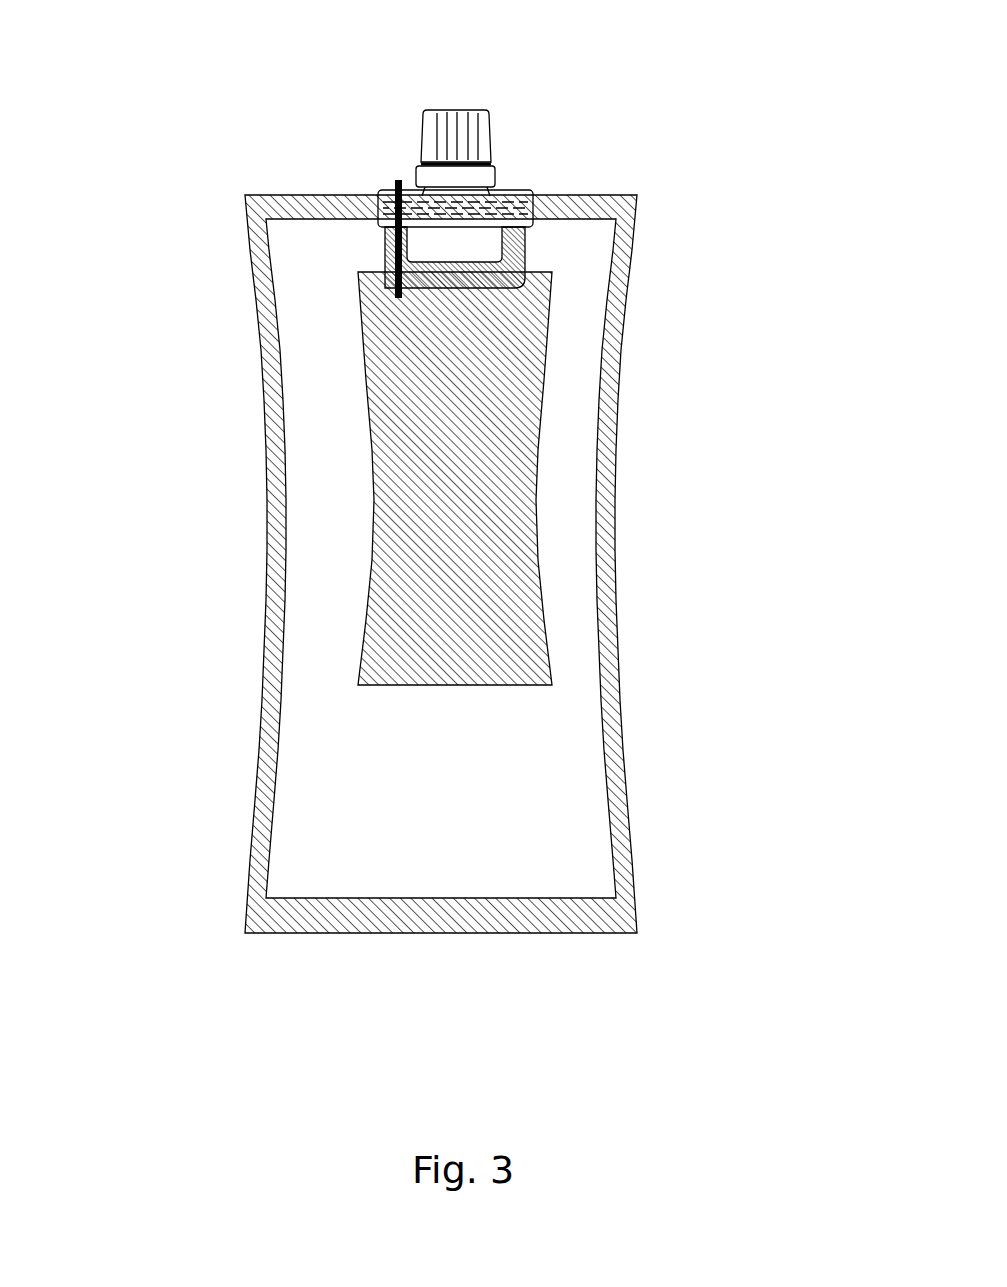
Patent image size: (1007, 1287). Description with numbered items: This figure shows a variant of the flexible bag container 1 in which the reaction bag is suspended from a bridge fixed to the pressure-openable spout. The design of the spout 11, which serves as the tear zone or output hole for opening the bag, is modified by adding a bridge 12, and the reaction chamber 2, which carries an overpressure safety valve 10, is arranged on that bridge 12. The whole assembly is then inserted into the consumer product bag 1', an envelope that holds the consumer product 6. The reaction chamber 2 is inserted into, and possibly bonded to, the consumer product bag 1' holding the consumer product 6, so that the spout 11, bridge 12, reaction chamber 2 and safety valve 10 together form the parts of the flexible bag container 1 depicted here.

The flexible bag container 1 is at (196, 130).
The consumer product bag 1' is at (527, 564).
The reaction chamber 2 is at (490, 557).
The consumer product 6 is at (575, 390).
The safety valve 10 is at (396, 178).
The spout 11 is at (528, 194).
The bridge 12 is at (522, 252).